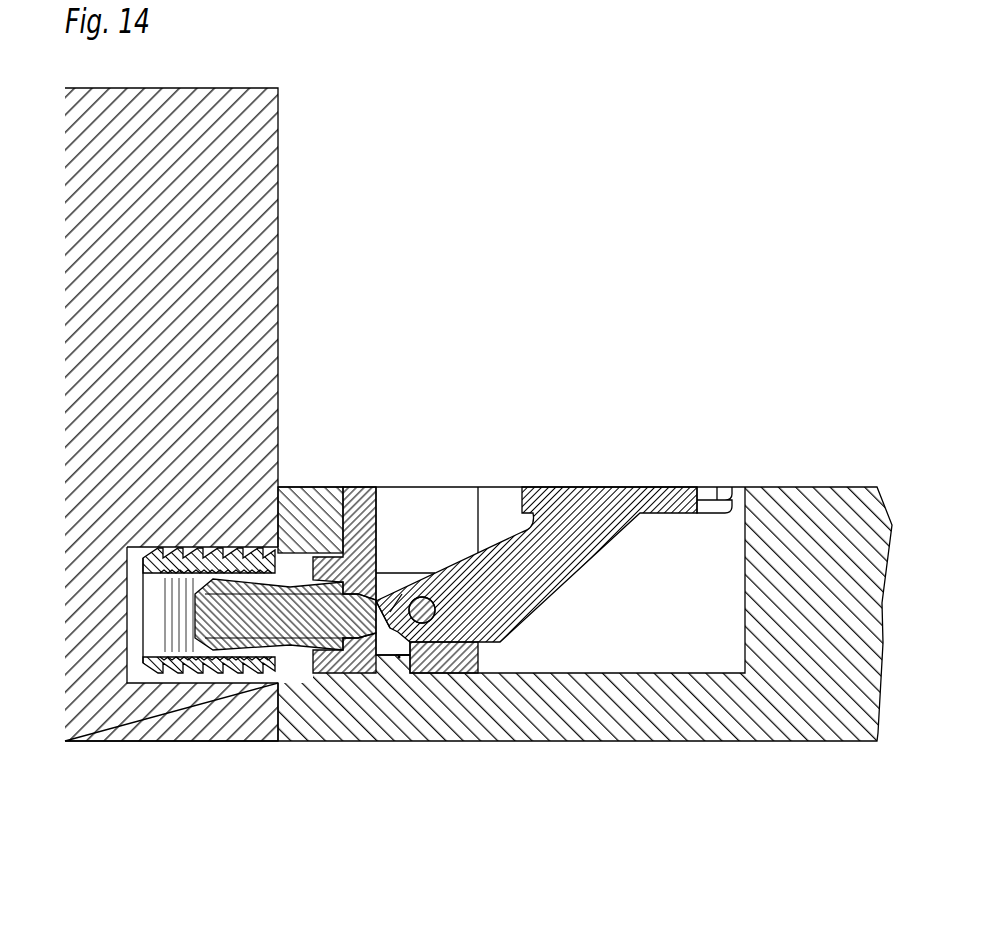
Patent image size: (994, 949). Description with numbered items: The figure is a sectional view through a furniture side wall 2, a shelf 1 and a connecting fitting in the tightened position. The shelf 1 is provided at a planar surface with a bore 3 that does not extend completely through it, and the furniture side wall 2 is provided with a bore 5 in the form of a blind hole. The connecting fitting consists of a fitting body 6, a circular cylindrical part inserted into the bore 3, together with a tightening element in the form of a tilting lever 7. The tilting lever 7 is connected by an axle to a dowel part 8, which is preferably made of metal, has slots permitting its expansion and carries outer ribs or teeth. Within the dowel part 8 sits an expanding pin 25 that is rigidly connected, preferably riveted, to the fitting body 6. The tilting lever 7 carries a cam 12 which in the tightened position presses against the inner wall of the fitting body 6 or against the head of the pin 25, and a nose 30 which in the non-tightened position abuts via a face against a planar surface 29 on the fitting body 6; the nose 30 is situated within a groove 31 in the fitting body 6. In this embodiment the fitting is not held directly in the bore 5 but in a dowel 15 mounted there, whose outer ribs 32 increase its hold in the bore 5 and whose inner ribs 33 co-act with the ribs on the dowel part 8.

The shelf 1 is at (808, 480).
The furniture side wall 2 is at (215, 137).
The bore 3 is at (698, 620).
The bore 5 is at (135, 577).
The fitting body 6 is at (412, 518).
The tilting lever 7 is at (578, 510).
The dowel part 8 is at (278, 580).
The cam 12 is at (380, 602).
The dowel 15 is at (195, 683).
The expanding pin 25 is at (295, 620).
The planar surface 29 is at (410, 643).
The nose 30 is at (393, 607).
The groove 31 is at (398, 657).
The ribs 32 is at (207, 545).
The ribs 33 is at (172, 643).